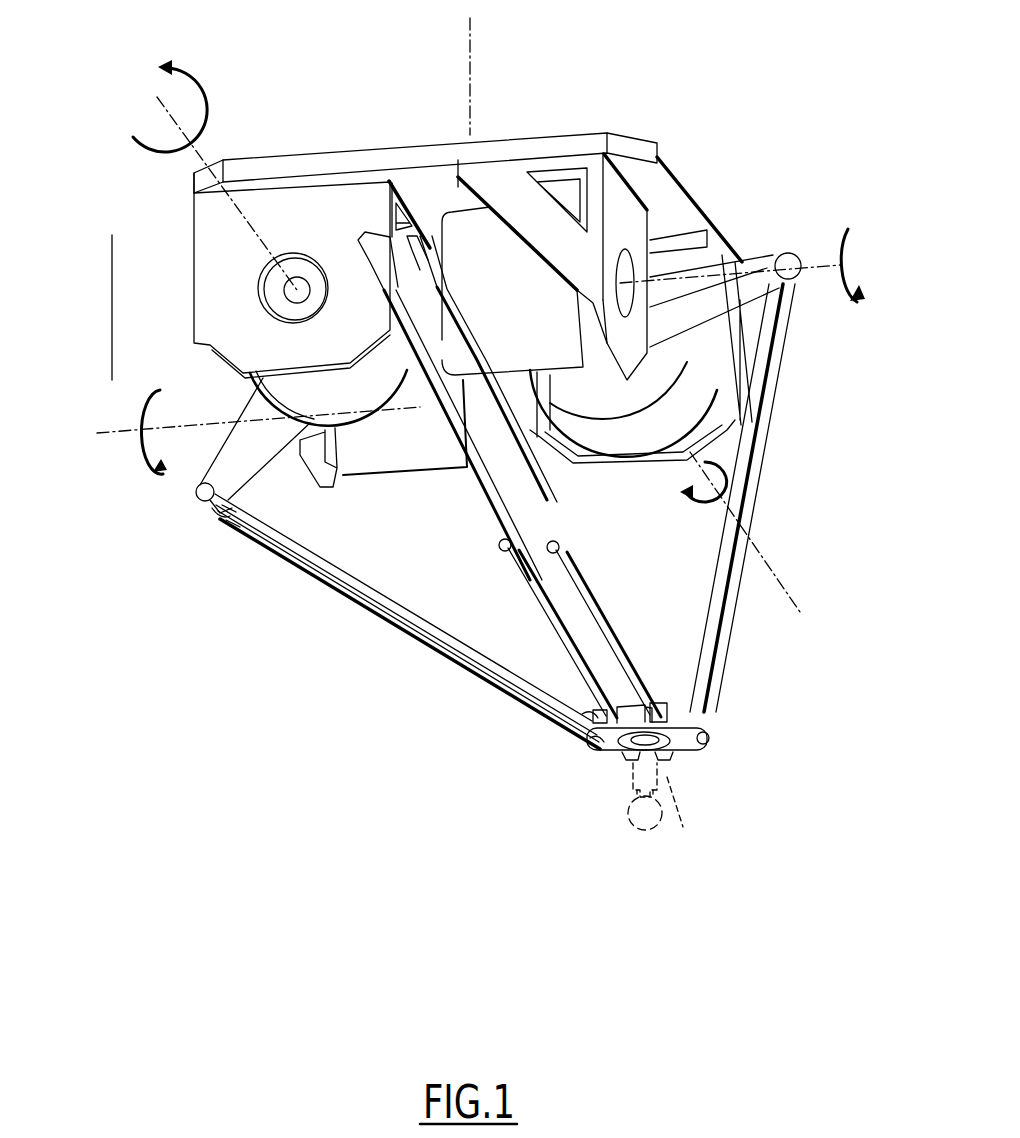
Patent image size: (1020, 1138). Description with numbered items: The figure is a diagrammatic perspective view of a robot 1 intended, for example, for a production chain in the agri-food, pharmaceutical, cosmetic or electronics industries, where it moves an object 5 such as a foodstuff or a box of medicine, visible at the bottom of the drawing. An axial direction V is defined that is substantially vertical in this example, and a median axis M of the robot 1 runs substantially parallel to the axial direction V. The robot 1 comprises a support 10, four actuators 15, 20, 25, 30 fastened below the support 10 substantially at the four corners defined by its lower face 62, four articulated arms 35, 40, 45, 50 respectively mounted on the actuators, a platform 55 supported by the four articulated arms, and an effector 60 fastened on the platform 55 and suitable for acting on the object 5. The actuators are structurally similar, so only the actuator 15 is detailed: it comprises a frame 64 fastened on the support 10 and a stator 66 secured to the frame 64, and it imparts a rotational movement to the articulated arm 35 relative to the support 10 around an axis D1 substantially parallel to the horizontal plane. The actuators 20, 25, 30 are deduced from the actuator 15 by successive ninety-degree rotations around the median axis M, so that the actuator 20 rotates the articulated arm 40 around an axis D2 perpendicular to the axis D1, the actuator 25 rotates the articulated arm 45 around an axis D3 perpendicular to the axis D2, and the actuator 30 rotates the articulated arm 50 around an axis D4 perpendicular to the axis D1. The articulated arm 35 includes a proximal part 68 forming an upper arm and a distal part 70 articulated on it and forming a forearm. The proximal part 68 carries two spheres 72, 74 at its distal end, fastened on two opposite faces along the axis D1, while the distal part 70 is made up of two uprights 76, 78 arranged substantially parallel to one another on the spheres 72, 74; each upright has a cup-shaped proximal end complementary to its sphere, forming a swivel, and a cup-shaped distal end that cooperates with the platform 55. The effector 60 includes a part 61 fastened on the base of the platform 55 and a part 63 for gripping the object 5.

The robot 1 is at (250, 660).
The object 5 is at (648, 822).
The support 10 is at (404, 157).
The actuator 15 is at (233, 283).
The actuator 20 is at (634, 205).
The actuator 25 is at (637, 437).
The actuator 30 is at (369, 447).
The articulated arm 35 is at (186, 527).
The articulated arm 40 is at (382, 233).
The articulated arm 45 is at (814, 320).
The articulated arm 50 is at (502, 476).
The platform 55 is at (693, 765).
The effector 60 is at (630, 773).
The part 61 is at (667, 777).
The lower face 62 is at (447, 188).
The part 63 is at (623, 797).
The frame 64 is at (283, 203).
The stator 66 is at (283, 390).
The proximal part 68 is at (240, 465).
The distal part 70 is at (365, 625).
The sphere 72 is at (220, 517).
The sphere 74 is at (193, 495).
The upright 76 is at (422, 627).
The upright 78 is at (487, 693).
The axis D1 is at (158, 100).
The axis D2 is at (757, 253).
The axis D3 is at (790, 597).
The axis D4 is at (106, 436).
The median axis M is at (470, 43).
The axial direction V is at (112, 302).